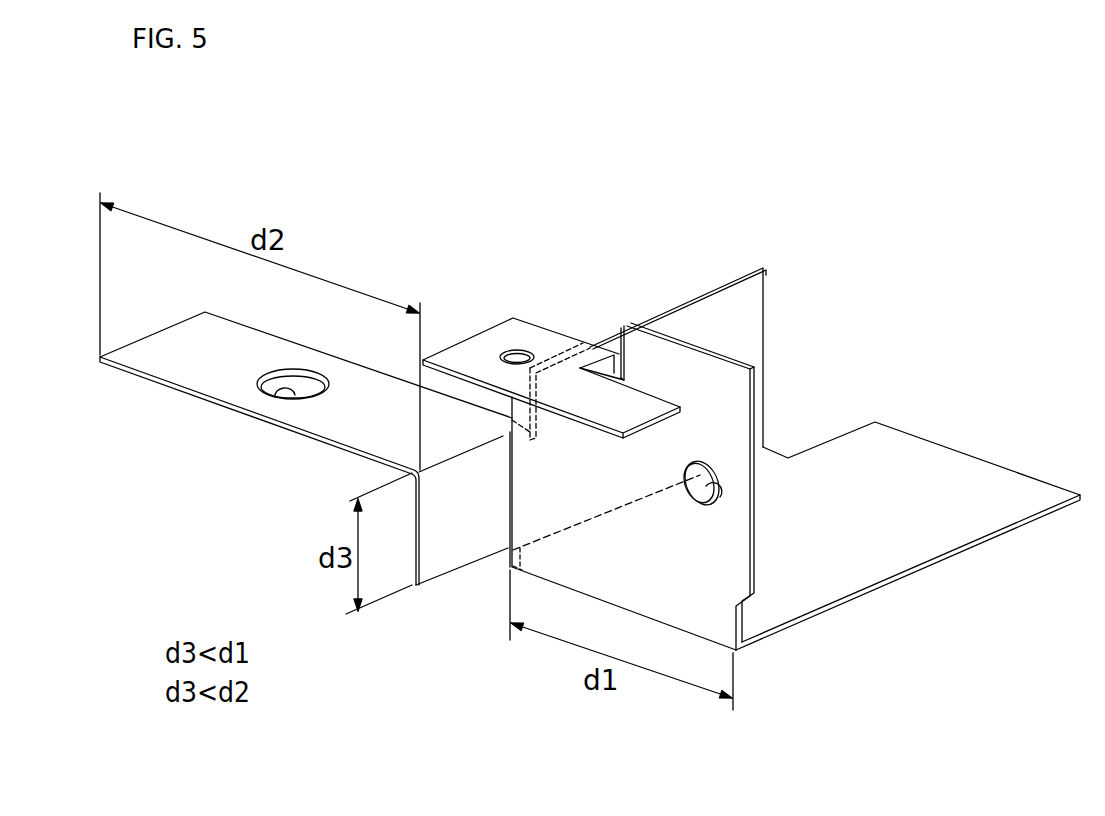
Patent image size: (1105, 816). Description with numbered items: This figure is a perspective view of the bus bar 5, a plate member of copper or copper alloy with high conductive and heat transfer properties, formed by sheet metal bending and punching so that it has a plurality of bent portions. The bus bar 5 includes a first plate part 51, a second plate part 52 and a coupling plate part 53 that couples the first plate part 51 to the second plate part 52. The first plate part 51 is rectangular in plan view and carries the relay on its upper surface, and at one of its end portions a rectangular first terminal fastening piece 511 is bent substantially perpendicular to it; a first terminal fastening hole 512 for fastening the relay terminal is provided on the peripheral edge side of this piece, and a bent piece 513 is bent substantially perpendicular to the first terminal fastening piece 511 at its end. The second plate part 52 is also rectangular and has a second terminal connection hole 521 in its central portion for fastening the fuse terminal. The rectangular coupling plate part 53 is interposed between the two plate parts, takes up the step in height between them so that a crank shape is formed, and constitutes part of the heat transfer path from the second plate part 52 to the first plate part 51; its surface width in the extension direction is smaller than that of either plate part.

The bus bar 5 is at (625, 222).
The first plate part 51 is at (905, 472).
The first terminal fastening piece 511 is at (688, 576).
The first terminal fastening hole 512 is at (717, 488).
The bent piece 513 is at (476, 347).
The second plate part 52 is at (177, 370).
The second terminal connection hole 521 is at (273, 393).
The coupling plate part 53 is at (452, 540).